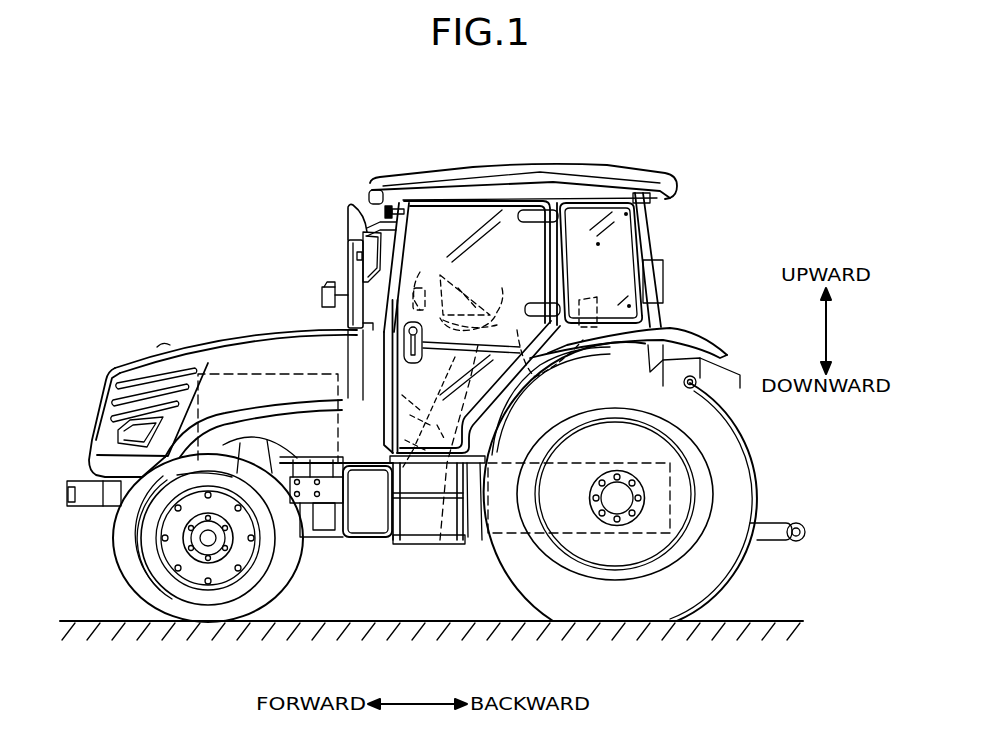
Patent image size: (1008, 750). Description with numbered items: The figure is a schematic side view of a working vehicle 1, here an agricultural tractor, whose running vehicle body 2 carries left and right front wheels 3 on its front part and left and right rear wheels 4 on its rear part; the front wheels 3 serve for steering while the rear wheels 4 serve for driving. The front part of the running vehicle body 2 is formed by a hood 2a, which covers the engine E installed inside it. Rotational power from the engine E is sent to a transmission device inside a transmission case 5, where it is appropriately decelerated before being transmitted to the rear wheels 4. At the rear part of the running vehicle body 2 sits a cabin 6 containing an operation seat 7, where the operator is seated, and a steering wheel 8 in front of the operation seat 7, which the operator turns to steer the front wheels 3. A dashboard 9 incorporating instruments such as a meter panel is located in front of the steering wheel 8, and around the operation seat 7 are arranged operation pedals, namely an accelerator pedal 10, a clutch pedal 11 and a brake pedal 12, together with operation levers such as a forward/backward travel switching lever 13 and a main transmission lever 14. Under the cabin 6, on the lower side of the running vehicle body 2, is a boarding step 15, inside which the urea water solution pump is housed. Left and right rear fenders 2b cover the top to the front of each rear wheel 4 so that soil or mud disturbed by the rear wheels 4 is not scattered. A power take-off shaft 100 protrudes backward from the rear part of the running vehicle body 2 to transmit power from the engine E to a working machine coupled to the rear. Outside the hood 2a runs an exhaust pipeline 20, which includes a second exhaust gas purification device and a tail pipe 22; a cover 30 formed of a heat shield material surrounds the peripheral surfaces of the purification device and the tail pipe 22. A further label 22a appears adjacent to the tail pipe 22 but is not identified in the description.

The working vehicle 1 is at (726, 156).
The running vehicle body 2 is at (212, 328).
The hood 2a is at (200, 343).
The rear fender 2b is at (680, 325).
The front wheel 3 is at (188, 614).
The rear wheel 4 is at (710, 567).
The transmission case 5 is at (473, 540).
The cabin 6 is at (546, 166).
The operation seat 7 is at (597, 297).
The steering wheel 8 is at (462, 284).
The dashboard 9 is at (420, 272).
The accelerator pedal 10 is at (390, 522).
The clutch pedal 11 is at (440, 540).
The brake pedal 12 is at (405, 543).
The forward/backward travel switching lever 13 is at (502, 288).
The main transmission lever 14 is at (517, 330).
The boarding step 15 is at (455, 545).
The exhaust pipeline 20 is at (328, 226).
The tail pipe 22 is at (350, 204).
The stay arm 22a is at (348, 204).
The cover 30 is at (346, 263).
The power take-off (PTO) shaft 100 is at (665, 503).
The engine E is at (263, 373).